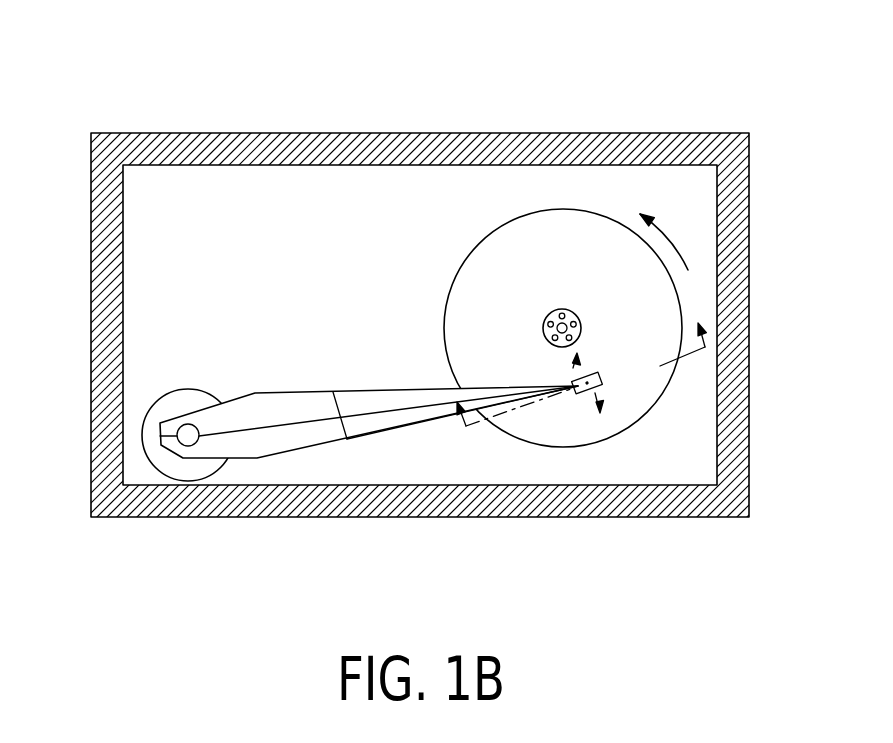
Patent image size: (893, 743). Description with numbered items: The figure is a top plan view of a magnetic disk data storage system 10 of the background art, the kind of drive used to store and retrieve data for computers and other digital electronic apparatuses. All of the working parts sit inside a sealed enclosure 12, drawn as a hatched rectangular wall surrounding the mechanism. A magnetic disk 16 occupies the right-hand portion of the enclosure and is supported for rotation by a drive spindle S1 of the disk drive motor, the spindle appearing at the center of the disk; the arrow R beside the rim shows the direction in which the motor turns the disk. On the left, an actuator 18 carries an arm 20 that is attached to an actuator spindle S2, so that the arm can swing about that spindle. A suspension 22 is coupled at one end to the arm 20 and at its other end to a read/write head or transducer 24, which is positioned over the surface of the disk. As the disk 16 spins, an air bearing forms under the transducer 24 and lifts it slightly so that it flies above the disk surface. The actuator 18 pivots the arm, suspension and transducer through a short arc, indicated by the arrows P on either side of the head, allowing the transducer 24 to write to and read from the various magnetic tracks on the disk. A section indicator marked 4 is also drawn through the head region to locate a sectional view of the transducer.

The magnetic disk data storage system 10 is at (614, 110).
The sealed enclosure 12 is at (357, 514).
The magnetic disk 16 is at (502, 250).
The actuator 18 is at (183, 396).
The arm 20 is at (287, 398).
The suspension 22 is at (408, 417).
The read/write head or transducer 24 is at (602, 377).
The drive spindle S1 is at (572, 312).
The actuator spindle S2 is at (200, 438).
The arrows P is at (599, 376).
The arrow R is at (666, 239).
The section line 4- 4 is at (568, 358).